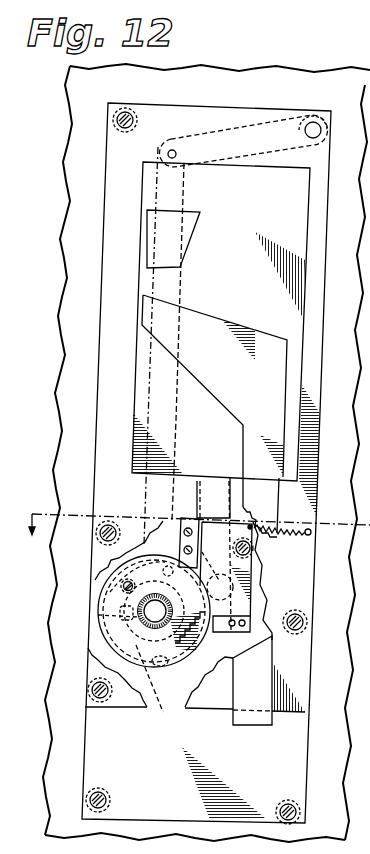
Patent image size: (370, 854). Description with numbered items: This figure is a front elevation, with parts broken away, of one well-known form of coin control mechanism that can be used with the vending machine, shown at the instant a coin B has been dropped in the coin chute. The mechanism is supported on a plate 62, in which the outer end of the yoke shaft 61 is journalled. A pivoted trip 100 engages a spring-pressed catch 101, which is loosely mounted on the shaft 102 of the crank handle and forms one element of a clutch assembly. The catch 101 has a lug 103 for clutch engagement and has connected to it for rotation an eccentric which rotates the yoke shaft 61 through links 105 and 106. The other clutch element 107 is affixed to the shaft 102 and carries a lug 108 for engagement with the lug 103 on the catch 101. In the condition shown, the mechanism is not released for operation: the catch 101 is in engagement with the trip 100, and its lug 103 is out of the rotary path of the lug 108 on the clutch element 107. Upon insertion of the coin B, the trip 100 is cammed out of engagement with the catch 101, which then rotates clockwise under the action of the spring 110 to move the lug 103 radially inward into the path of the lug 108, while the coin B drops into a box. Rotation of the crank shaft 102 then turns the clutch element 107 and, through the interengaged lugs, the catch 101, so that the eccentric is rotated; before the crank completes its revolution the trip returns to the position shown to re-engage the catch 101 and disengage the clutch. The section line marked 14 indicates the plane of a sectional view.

The plate 62 is at (315, 75).
The shaft 61 is at (322, 113).
The link 106 is at (228, 128).
The link 105 is at (187, 193).
The section line 14- 14 is at (188, 540).
The lug 103 is at (105, 587).
The lug 108 is at (118, 613).
The shaft 102 is at (150, 617).
The clutch element 107 is at (122, 628).
The spring 110 is at (188, 665).
The spring-pressed catch 101 is at (158, 705).
The pivoted trip 100 is at (247, 563).
The coin B is at (220, 569).